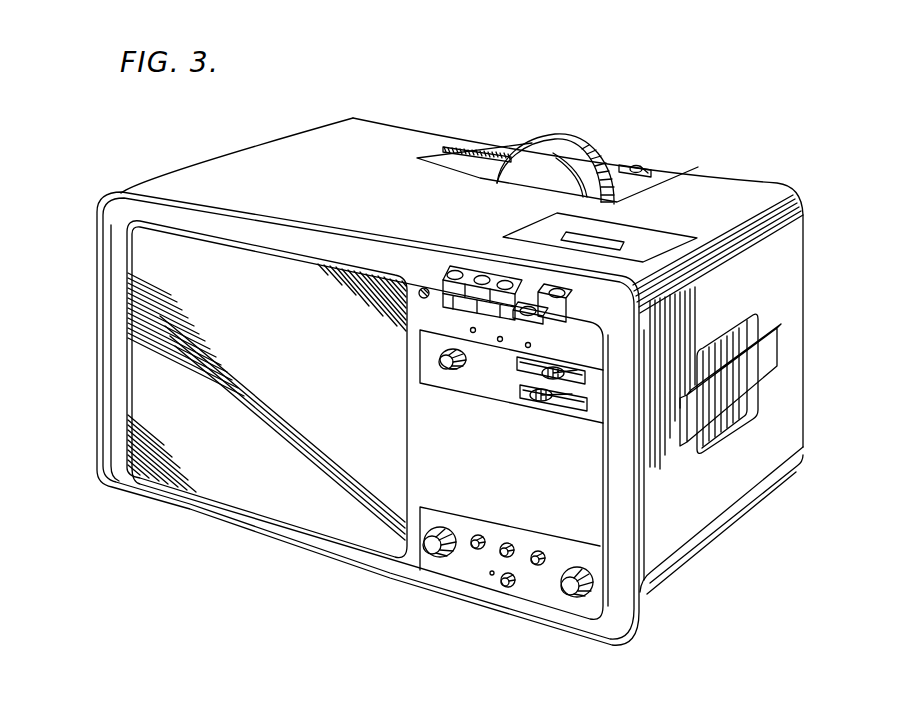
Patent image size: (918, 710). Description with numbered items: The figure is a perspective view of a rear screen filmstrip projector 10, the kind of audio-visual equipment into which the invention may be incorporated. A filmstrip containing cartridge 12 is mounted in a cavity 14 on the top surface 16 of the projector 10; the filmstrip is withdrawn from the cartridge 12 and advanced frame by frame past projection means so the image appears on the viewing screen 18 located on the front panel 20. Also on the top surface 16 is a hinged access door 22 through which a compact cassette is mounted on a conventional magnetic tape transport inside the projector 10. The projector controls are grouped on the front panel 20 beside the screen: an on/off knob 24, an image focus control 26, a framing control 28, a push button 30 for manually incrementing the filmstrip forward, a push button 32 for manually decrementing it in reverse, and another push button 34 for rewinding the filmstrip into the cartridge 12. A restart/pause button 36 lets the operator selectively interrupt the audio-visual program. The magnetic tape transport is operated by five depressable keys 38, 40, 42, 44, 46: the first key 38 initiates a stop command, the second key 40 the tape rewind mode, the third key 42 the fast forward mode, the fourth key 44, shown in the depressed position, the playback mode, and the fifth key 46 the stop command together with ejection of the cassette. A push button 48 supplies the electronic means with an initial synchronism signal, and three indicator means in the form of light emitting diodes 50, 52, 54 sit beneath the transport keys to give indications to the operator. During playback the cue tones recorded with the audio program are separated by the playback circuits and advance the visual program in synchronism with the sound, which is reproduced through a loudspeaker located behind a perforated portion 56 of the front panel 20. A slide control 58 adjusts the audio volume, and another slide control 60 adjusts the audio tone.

The rear screen filmstrip projector 10 is at (738, 147).
The filmstrip containing cartridge 12 is at (593, 152).
The cavity 14 is at (655, 173).
The top surface 16 is at (466, 222).
The viewing screen 18 is at (294, 355).
The front panel 20 is at (577, 518).
The hinged access door 22 is at (662, 243).
The on/off knob 24 is at (578, 593).
The image focus control 26 is at (430, 548).
The framing control 28 is at (440, 366).
The push button for forward incrementing 30 is at (472, 546).
The push button for reverse decrementing 32 is at (501, 552).
The rewind push button 34 is at (540, 563).
The restart/pause button 36 is at (515, 582).
The first key 38 is at (460, 272).
The second key 40 is at (484, 277).
The third key 42 is at (534, 264).
The fourth key 44 is at (530, 307).
The fifth key 46 is at (560, 292).
The push button 48 is at (418, 290).
The light emitting diode 50 is at (470, 332).
The light emitting diode 52 is at (499, 342).
The light emitting diode 54 is at (528, 348).
The perforated portion 56 is at (518, 477).
The slide control 58 is at (580, 393).
The slide control 60 is at (580, 371).